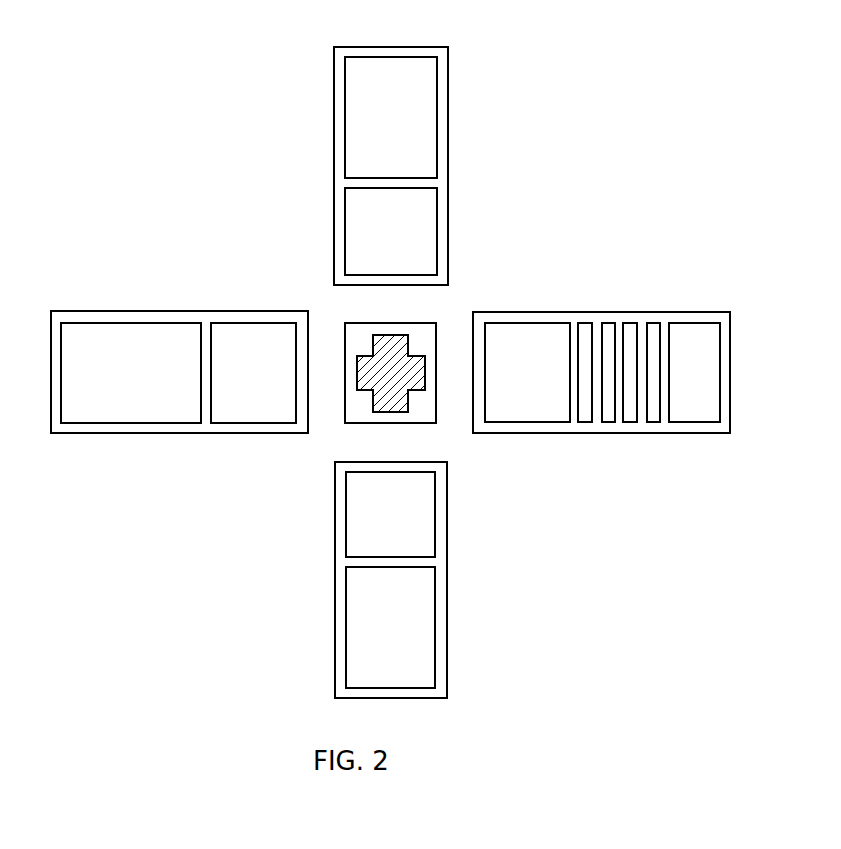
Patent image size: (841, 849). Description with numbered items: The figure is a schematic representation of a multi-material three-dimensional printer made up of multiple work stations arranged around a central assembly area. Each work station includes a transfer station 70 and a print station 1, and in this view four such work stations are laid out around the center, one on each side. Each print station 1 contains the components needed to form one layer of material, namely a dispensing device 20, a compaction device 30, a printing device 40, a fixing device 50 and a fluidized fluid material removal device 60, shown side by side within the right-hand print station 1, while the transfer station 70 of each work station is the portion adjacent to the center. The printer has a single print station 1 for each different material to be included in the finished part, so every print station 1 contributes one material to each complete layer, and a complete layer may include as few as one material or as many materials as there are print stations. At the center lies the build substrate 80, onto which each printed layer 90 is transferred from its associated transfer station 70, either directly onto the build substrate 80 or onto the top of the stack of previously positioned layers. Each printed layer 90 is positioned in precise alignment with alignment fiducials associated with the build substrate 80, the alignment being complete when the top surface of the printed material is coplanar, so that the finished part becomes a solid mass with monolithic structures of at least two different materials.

The print station 1 is at (418, 93).
The dispensing device 20 is at (710, 333).
The compaction device 30 is at (652, 322).
The printing device 40 is at (627, 322).
The fixing device 50 is at (607, 322).
The fluidized fluid material removal device 60 is at (587, 322).
The transfer station 70 is at (505, 333).
The build substrate 80 is at (423, 407).
The printed layer 90 is at (378, 338).